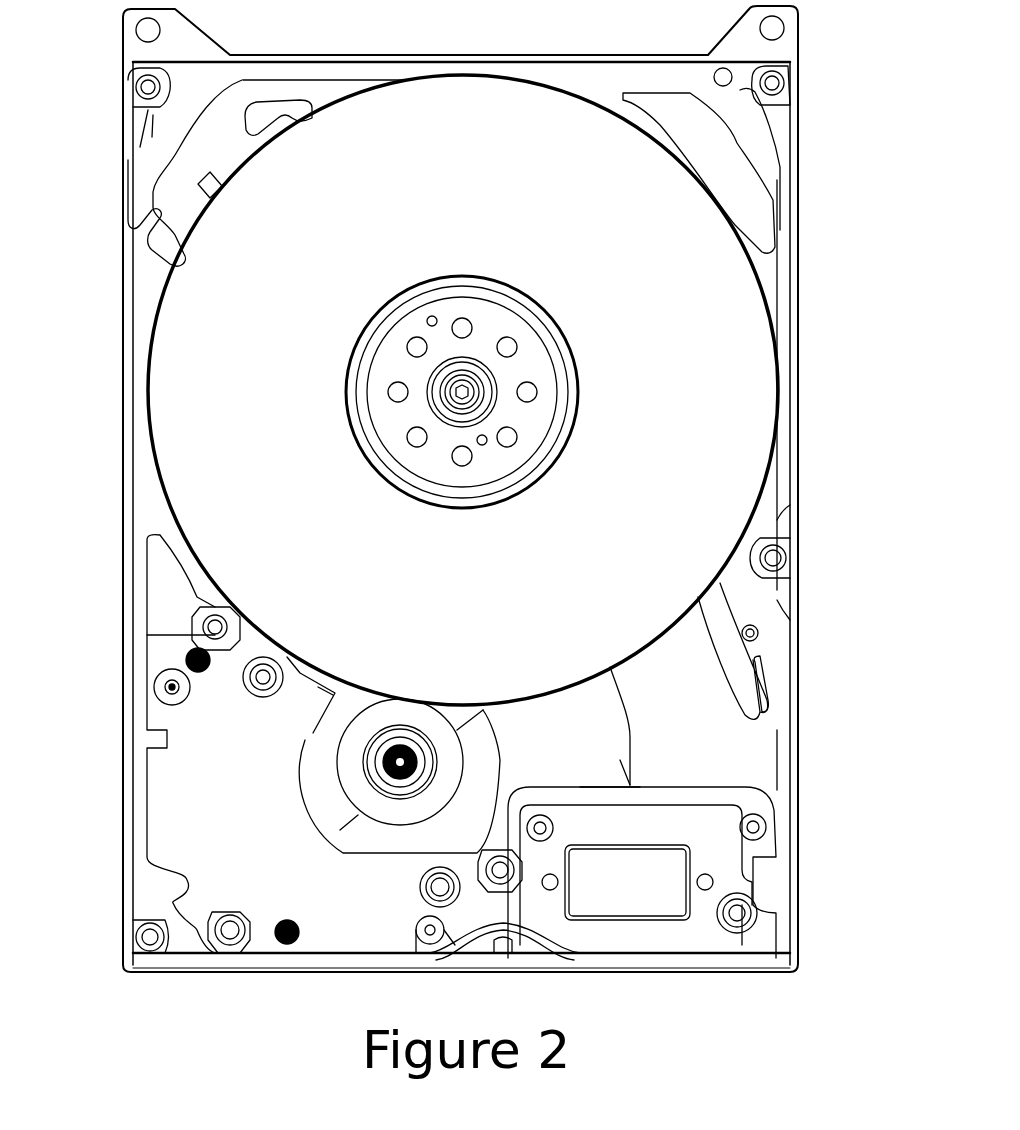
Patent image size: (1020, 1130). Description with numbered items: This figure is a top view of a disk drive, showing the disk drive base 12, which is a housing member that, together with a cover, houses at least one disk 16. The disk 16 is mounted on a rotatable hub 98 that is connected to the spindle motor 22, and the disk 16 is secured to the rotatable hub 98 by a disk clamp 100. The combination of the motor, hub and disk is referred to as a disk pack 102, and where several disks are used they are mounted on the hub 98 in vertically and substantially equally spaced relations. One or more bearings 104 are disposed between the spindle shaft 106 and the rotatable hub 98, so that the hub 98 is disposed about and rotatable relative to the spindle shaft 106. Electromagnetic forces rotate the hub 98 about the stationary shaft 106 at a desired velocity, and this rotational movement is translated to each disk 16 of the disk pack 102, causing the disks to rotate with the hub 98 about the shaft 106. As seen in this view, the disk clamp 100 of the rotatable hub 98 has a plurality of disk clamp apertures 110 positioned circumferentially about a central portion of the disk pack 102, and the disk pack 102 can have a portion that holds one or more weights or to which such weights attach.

The disk drive base 12 is at (143, 515).
The disk 16 is at (279, 308).
The spindle motor 22 is at (586, 382).
The rotatable hub 98 is at (360, 478).
The disk clamp 100 is at (530, 420).
The disk pack 102 is at (778, 278).
The bearing 104 is at (395, 393).
The spindle shaft 106 is at (478, 415).
The disk clamp apertures 110 is at (462, 318).